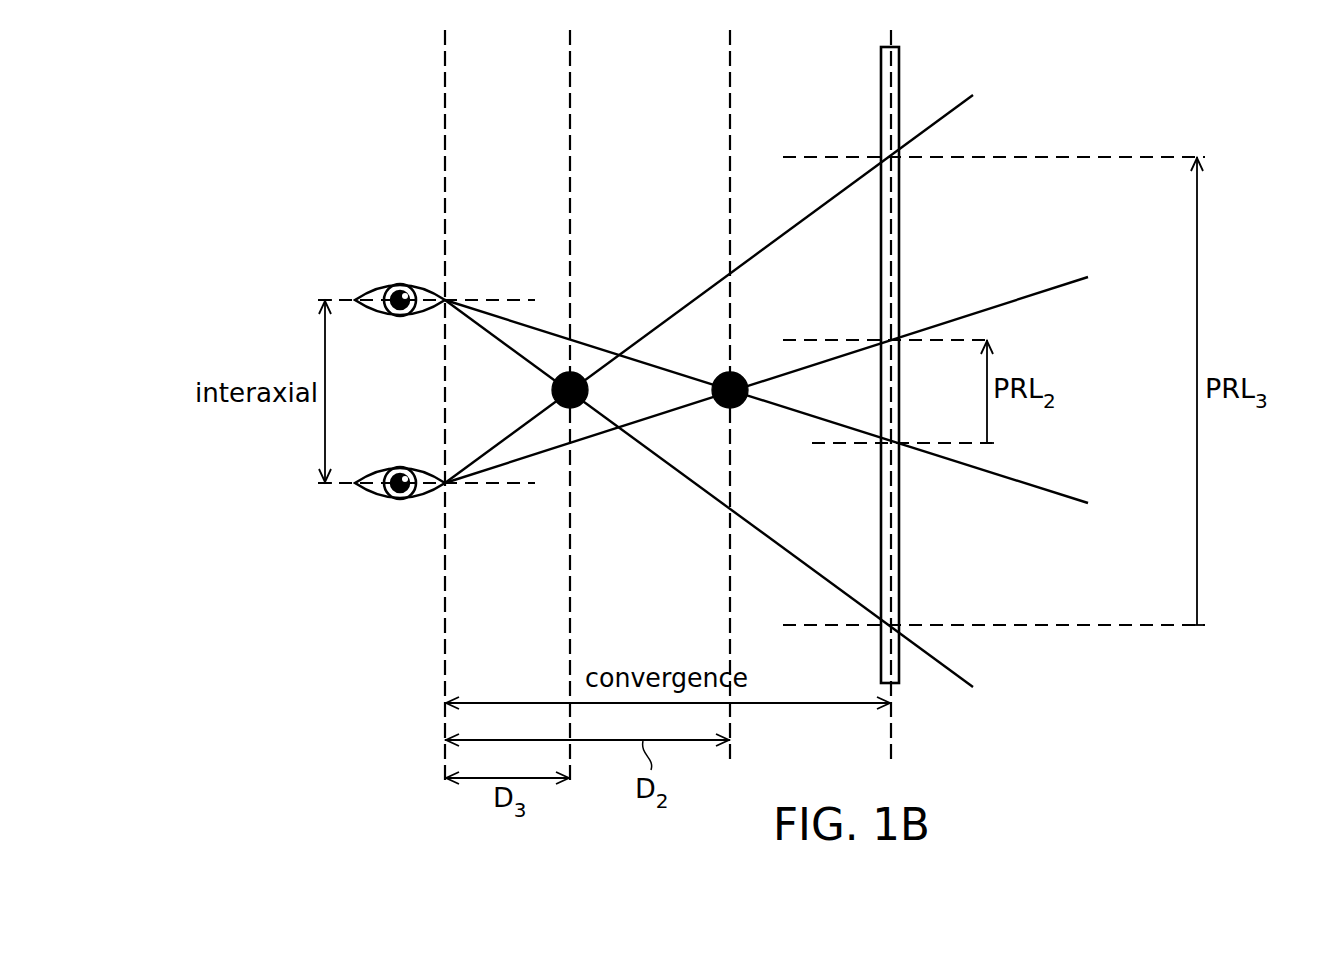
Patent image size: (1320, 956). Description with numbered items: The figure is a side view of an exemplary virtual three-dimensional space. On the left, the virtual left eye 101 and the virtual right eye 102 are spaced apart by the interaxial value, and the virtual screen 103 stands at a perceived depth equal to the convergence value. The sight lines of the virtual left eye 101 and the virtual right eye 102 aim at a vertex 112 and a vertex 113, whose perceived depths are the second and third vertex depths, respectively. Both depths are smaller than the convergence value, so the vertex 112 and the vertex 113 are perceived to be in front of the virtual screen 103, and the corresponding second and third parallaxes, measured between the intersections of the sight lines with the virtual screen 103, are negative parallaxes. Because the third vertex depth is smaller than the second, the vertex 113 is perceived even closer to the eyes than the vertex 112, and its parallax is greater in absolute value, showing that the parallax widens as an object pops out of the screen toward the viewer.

The virtual left eye 101 is at (400, 285).
The virtual right eye 102 is at (400, 498).
The virtual screen 103 is at (900, 72).
The vertex 112 is at (740, 408).
The vertex 113 is at (552, 391).